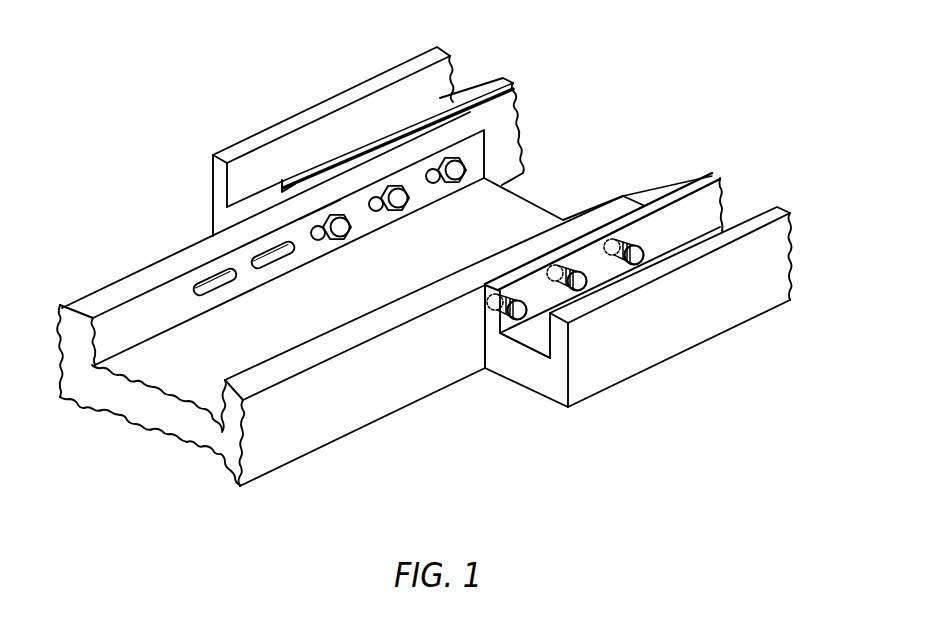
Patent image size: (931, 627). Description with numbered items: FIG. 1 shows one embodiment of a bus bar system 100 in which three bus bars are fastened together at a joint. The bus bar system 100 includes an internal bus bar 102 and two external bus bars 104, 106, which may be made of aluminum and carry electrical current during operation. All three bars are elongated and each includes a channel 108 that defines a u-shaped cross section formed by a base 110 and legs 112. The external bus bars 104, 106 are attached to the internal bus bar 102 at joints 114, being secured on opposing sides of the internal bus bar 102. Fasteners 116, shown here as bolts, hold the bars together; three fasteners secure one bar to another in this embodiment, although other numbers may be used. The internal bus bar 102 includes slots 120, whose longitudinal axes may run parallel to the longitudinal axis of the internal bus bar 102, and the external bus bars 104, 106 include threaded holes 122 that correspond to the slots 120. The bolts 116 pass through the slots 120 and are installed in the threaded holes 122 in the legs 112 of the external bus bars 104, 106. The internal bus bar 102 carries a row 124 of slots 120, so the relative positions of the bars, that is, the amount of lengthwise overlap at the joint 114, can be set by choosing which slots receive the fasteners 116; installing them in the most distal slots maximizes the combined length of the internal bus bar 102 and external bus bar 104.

The bus bar system 100 is at (204, 94).
The internal bus bar 102 is at (312, 450).
The external bus bar 104 is at (417, 80).
The external bus bar 106 is at (623, 352).
The channel 108 is at (549, 192).
The base 110 is at (138, 438).
The legs 112 is at (65, 302).
The joints 114 is at (360, 142).
The fasteners 116 is at (396, 212).
The slots 120 is at (317, 250).
The threaded holes 122 is at (639, 241).
The row of slots 124 is at (333, 198).